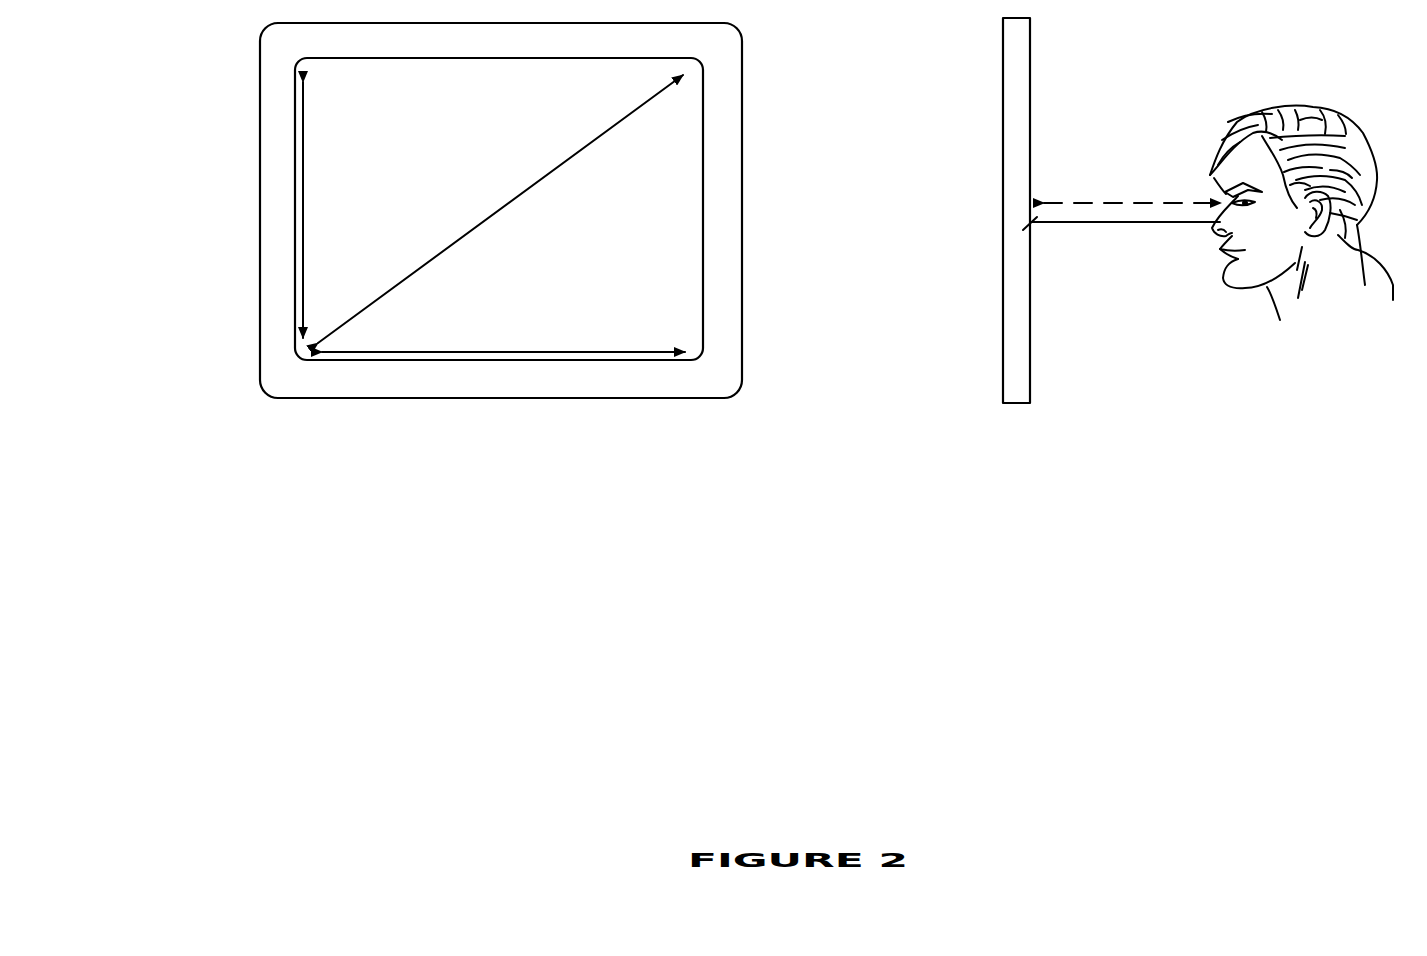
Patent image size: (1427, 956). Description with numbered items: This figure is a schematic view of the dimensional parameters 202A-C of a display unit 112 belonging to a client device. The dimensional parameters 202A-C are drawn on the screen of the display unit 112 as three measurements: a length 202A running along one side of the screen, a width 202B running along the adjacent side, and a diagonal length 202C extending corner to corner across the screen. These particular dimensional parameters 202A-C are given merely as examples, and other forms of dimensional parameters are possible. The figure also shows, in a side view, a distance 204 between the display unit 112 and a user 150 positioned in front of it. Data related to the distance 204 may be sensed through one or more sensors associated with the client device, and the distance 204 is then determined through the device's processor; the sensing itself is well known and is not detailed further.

The display unit 112 is at (703, 113).
The user 150 is at (1315, 227).
The dimensional parameters 202A-C is at (378, 213).
The length 202A is at (305, 138).
The width 202B is at (618, 352).
The diagonal length 202C is at (563, 158).
The distance 204 is at (1142, 203).